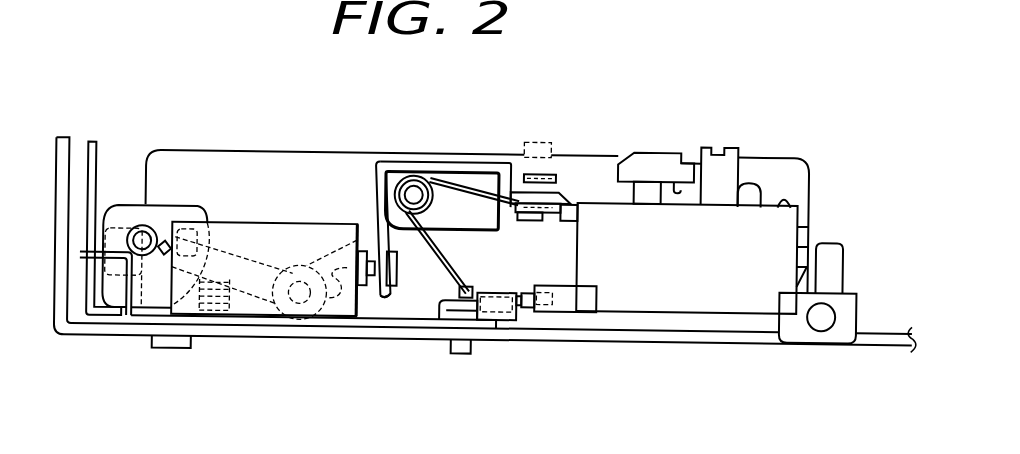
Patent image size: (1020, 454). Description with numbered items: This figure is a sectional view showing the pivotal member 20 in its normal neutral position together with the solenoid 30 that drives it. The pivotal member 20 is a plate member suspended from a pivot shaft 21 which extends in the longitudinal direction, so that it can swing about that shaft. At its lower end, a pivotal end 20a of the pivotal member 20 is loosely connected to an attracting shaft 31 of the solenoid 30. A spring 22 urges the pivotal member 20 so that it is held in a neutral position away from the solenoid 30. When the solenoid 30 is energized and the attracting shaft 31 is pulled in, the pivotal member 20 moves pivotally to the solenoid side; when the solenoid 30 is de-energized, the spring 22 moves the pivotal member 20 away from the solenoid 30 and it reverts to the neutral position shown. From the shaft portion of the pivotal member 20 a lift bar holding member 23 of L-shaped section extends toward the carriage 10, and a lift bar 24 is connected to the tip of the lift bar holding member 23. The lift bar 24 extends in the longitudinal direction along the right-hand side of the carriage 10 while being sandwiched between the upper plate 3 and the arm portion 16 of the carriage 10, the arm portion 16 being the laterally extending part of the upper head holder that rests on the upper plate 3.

The upper plate 3 is at (523, 227).
The carriage 10 is at (623, 230).
The arm portion 16 is at (533, 174).
The pivotal member 20 is at (375, 204).
The pivotal end 20a is at (384, 305).
The pivot shaft 21 is at (413, 192).
The spring 22 is at (476, 178).
The lift bar holding member 23 is at (448, 174).
The lift bar 24 is at (540, 222).
The solenoid 30 is at (274, 231).
The attracting shaft 31 is at (397, 289).